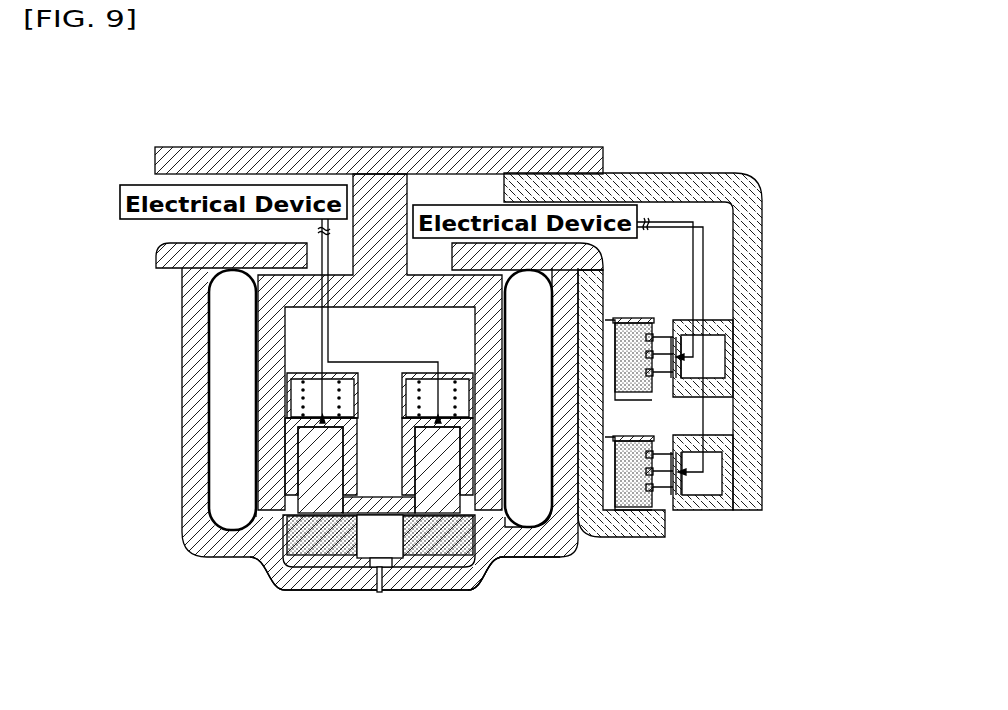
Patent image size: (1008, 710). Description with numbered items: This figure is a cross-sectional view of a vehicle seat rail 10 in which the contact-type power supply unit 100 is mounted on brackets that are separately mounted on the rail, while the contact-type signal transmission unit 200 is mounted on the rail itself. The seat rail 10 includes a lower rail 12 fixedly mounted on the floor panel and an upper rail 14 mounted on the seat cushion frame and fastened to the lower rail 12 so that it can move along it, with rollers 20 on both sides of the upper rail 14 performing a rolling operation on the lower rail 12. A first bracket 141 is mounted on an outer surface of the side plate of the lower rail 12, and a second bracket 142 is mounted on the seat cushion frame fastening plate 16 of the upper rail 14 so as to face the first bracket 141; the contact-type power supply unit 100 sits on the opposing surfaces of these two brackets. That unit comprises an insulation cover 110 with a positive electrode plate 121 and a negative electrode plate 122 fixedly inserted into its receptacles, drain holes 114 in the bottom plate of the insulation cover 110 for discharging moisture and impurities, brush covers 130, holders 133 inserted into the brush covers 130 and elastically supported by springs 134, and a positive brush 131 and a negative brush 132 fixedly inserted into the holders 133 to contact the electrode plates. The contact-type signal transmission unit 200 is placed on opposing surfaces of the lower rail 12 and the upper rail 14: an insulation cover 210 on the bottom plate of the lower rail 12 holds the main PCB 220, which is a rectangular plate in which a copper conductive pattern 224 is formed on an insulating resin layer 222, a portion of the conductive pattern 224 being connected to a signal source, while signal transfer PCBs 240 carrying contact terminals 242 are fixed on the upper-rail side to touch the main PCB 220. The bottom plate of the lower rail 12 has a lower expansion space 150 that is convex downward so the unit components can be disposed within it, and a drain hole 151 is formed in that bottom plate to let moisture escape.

The seat rail 10 is at (314, 382).
The lower rail 12 is at (192, 322).
The upper rail 14 is at (272, 355).
The seat cushion frame fastening plate 16 is at (258, 160).
The rollers 20 is at (230, 472).
The contact-type power supply unit 100 is at (238, 565).
The insulation cover 110 is at (343, 582).
The drain holes 114 is at (392, 572).
The positive electrode plate 121 is at (340, 572).
The negative electrode plate 122 is at (470, 570).
The brush covers 130 is at (284, 490).
The positive brush 131 is at (318, 548).
The negative brush 132 is at (498, 572).
The holders 133 is at (320, 432).
The springs 134 is at (296, 405).
The first bracket 141 is at (600, 528).
The second bracket 142 is at (752, 232).
The lower expansion space 150 is at (433, 560).
The drain hole 151 is at (382, 570).
The contact-type signal transmission unit 200 is at (670, 310).
The insulation cover 210 is at (633, 312).
The main PCB 220 is at (628, 632).
The insulating resin layer 222 is at (640, 396).
The conductive pattern 224 is at (655, 386).
The signal transfer PCBs 240 is at (700, 512).
The contact terminals 242 is at (688, 505).